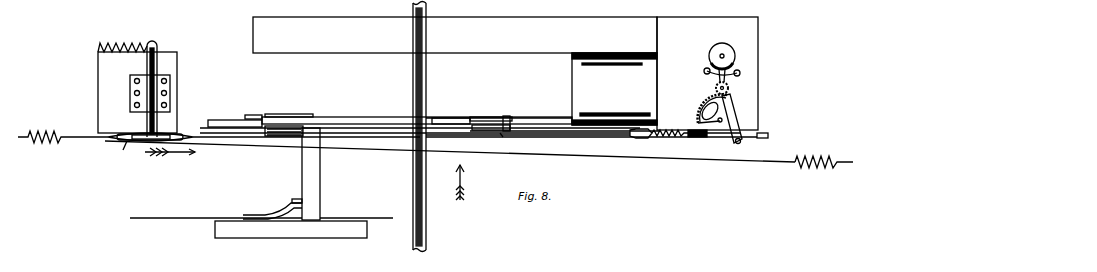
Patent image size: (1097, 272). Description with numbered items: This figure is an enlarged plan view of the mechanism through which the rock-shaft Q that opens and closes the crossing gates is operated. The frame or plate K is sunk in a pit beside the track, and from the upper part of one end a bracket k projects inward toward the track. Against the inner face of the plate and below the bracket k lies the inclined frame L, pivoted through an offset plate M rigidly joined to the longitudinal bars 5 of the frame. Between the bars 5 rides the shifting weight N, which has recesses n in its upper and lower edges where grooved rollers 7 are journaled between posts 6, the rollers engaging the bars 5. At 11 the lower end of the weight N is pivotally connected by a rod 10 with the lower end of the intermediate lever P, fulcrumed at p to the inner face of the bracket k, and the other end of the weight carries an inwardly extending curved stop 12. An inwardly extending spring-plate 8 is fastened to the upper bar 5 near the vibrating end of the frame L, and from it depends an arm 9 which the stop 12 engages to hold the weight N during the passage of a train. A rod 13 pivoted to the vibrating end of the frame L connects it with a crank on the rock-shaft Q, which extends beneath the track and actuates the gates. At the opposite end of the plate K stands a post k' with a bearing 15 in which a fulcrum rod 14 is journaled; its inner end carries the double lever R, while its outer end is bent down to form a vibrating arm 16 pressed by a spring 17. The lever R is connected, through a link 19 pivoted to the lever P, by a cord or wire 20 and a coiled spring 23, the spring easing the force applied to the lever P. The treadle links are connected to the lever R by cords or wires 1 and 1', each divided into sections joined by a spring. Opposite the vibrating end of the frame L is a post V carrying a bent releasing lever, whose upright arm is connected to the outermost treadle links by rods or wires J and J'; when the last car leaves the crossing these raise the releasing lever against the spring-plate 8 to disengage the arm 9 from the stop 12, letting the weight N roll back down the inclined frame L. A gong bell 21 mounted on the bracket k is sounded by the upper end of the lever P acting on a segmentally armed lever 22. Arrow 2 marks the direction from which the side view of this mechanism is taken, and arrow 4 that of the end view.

The cord or wire 1 is at (219, 143).
The cord or wire 1' is at (479, 154).
The arrow 2 is at (463, 182).
The arrow 4 is at (170, 157).
The longitudinal bars 5 is at (551, 128).
The posts 6 is at (490, 118).
The grooved rollers 7 is at (506, 117).
The spring-plate 8 is at (311, 174).
The arm 9 is at (371, 124).
The rod 10 is at (583, 137).
The pivotal connection 11 is at (503, 137).
The curved stop 12 is at (297, 137).
The rod 13 is at (263, 120).
The fulcrum rod 14 is at (147, 122).
The bearing 15 is at (150, 93).
The vibrating arm 16 is at (152, 43).
The spring 17 is at (122, 42).
The link 19 is at (692, 138).
The cord or wire 20 is at (484, 131).
The gong bell 21 is at (727, 64).
The segmentally armed lever 22 is at (731, 107).
The coiled spring 23 is at (665, 138).
The frame or plate K is at (455, 35).
The bracket k is at (707, 73).
The post k' is at (137, 92).
The inclined frame L is at (221, 124).
The offset plate M is at (614, 89).
The shifting weight N is at (451, 121).
The recesses n is at (306, 117).
The intermediate lever P is at (602, 137).
The fulcrum p is at (735, 143).
The rock-shaft Q is at (427, 81).
The double lever R is at (130, 152).
The rod or wire J is at (216, 209).
The rod or wire J' is at (356, 210).
The post V is at (297, 225).